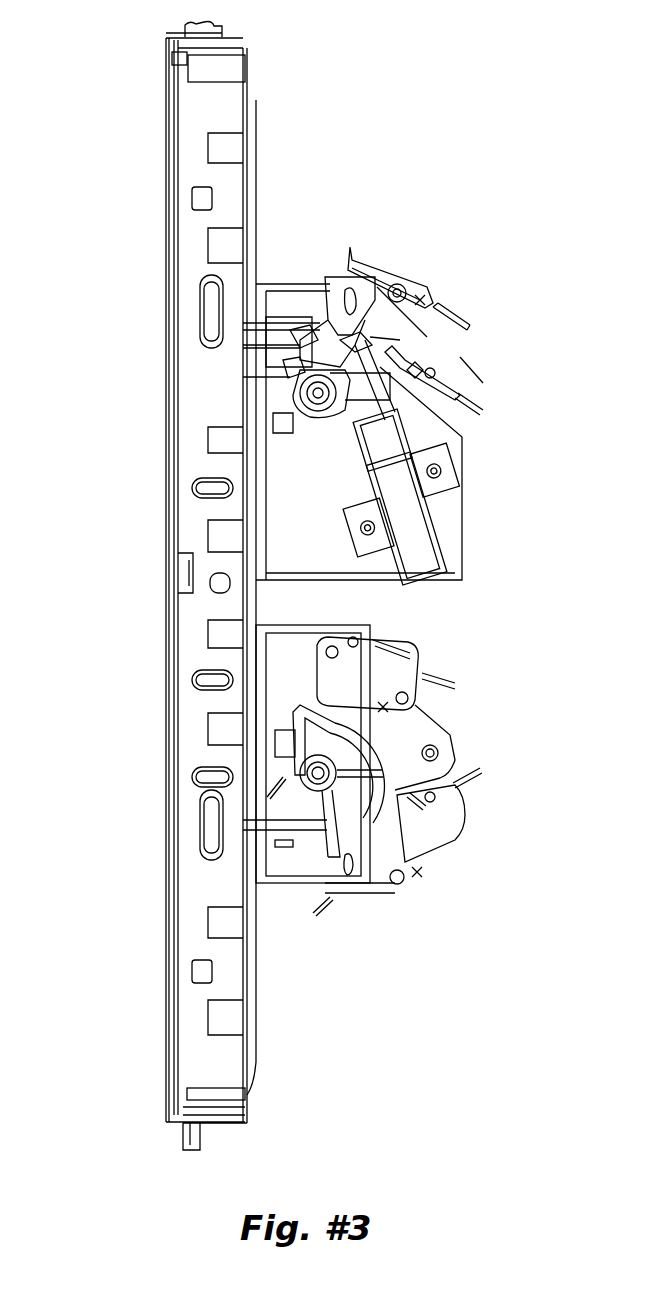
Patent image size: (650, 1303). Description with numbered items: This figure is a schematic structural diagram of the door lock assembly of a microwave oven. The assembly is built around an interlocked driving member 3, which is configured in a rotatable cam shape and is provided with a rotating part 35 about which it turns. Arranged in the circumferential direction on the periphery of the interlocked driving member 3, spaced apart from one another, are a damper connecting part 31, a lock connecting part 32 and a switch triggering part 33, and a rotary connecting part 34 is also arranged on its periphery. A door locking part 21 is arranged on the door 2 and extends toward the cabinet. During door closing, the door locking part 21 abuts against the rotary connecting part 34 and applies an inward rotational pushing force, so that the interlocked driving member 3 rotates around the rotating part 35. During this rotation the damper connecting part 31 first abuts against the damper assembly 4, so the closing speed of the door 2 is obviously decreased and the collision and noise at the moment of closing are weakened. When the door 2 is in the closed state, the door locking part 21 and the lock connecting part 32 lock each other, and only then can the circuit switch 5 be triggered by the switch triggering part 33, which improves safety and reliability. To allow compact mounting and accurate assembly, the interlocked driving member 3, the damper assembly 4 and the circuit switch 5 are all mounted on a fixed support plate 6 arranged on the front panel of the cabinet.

The door 2 is at (165, 610).
The interlocked driving member 3 is at (333, 345).
The damper assembly 4 is at (408, 533).
The circuit switch 5 is at (427, 323).
The fixed support plate 6 is at (300, 497).
The door locking part 21 is at (300, 343).
The damper connecting part 31 is at (409, 467).
The lock connecting part 32 is at (290, 370).
The switch triggering part 33 is at (400, 340).
The rotary connecting part 34 is at (352, 340).
The rotating part 35 is at (295, 393).